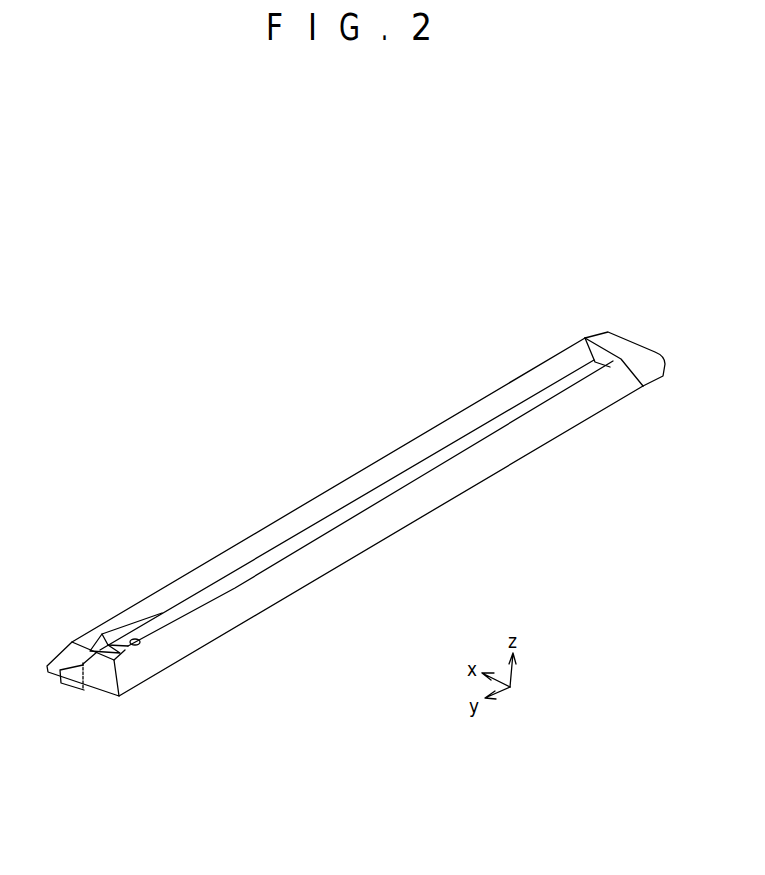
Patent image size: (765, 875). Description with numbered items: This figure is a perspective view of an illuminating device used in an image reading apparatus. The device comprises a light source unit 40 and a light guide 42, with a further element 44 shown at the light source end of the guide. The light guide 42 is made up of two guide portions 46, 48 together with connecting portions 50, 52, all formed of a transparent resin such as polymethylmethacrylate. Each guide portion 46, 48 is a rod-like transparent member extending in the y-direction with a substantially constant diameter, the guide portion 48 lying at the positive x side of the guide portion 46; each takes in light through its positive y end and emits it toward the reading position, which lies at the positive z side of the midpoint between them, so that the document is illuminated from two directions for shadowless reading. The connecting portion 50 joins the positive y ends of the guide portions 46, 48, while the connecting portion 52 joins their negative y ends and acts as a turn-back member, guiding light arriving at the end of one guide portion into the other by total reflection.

The light source unit 40 is at (63, 692).
The light guide 42 is at (265, 481).
The spring contact 44 is at (91, 650).
The guide portion 46 is at (470, 487).
The guide portion 48 is at (376, 464).
The connecting portion 50 is at (138, 644).
The connecting portion 52 is at (604, 340).